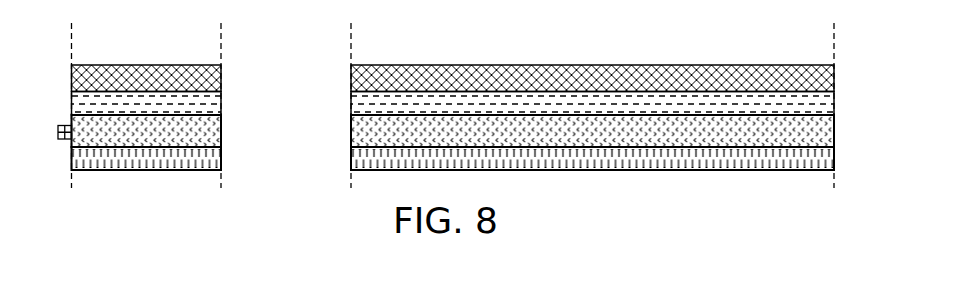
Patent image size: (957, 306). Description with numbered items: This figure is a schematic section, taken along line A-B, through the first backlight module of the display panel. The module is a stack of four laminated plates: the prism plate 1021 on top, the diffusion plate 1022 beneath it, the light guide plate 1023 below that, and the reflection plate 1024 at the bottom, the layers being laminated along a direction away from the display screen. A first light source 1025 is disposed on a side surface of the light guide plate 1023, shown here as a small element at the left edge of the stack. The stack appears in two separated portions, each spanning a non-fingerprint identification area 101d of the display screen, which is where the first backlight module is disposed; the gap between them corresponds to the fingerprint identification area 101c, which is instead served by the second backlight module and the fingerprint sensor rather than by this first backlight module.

The prism plate 1021 is at (834, 80).
The diffusion plate 1022 is at (834, 103).
The light guide plate 1023 is at (834, 127).
The reflection plate 1024 is at (834, 160).
The first light source 1025 is at (58, 132).
The non-fingerprint identification area 101d is at (834, 38).
The fingerprint identification area 101c is at (221, 38).